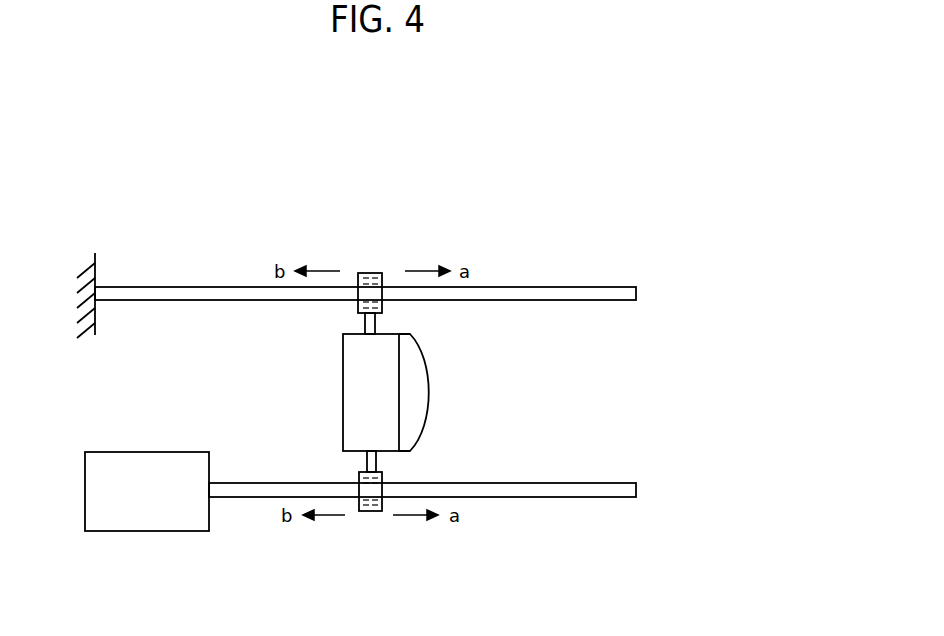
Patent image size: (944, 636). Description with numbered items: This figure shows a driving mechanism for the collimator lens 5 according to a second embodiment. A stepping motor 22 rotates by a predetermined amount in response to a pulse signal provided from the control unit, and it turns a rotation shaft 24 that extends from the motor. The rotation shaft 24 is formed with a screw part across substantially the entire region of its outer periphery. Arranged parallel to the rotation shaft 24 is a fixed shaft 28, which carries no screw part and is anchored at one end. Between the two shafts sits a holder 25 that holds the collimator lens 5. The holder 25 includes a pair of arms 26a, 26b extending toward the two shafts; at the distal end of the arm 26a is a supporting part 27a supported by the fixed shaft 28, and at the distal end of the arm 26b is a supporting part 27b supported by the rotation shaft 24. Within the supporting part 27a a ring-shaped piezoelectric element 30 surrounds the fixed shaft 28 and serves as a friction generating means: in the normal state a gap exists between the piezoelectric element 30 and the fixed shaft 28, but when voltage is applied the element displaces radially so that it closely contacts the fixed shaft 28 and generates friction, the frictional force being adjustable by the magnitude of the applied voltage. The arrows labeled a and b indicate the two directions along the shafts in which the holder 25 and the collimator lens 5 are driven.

The collimator lens 5 is at (425, 384).
The stepping motor 22 is at (85, 495).
The rotation shaft 24 is at (512, 498).
The holder 25 is at (350, 398).
The arm 26a is at (366, 326).
The arm 26b is at (367, 465).
The supporting part 27a is at (405, 262).
The supporting part 27b is at (368, 512).
The fixed shaft 28 is at (548, 287).
The piezoelectric element 30 is at (378, 283).